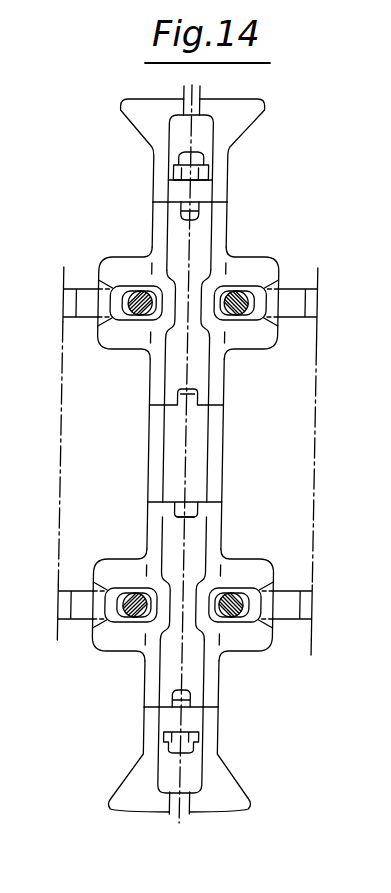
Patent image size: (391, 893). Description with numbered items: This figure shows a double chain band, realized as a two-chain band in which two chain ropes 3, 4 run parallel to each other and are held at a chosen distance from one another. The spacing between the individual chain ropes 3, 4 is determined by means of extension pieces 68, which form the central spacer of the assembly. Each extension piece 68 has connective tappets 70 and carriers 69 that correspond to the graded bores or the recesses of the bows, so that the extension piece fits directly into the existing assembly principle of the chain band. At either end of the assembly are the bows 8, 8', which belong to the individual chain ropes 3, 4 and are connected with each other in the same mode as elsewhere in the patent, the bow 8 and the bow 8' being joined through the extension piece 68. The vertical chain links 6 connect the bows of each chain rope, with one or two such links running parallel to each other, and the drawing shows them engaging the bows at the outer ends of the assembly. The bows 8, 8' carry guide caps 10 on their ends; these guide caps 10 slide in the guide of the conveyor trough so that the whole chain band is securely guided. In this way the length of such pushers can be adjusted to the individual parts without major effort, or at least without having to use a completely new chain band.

The guide cap 10 is at (232, 128).
The bow 8 is at (222, 352).
The bow 8' is at (222, 612).
The extension piece 68 is at (211, 445).
The carrier 69 is at (197, 508).
The connective tappet 70 is at (187, 518).
The chain rope 4 is at (71, 290).
The vertical chain link 6 is at (312, 292).
The chain rope 3 is at (77, 606).